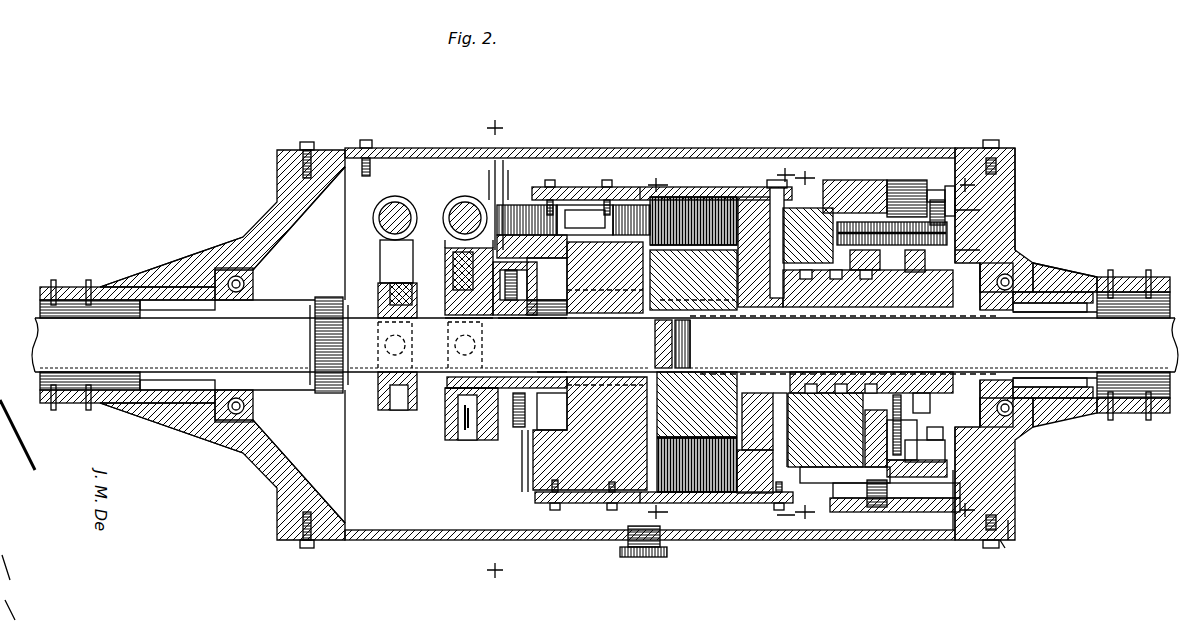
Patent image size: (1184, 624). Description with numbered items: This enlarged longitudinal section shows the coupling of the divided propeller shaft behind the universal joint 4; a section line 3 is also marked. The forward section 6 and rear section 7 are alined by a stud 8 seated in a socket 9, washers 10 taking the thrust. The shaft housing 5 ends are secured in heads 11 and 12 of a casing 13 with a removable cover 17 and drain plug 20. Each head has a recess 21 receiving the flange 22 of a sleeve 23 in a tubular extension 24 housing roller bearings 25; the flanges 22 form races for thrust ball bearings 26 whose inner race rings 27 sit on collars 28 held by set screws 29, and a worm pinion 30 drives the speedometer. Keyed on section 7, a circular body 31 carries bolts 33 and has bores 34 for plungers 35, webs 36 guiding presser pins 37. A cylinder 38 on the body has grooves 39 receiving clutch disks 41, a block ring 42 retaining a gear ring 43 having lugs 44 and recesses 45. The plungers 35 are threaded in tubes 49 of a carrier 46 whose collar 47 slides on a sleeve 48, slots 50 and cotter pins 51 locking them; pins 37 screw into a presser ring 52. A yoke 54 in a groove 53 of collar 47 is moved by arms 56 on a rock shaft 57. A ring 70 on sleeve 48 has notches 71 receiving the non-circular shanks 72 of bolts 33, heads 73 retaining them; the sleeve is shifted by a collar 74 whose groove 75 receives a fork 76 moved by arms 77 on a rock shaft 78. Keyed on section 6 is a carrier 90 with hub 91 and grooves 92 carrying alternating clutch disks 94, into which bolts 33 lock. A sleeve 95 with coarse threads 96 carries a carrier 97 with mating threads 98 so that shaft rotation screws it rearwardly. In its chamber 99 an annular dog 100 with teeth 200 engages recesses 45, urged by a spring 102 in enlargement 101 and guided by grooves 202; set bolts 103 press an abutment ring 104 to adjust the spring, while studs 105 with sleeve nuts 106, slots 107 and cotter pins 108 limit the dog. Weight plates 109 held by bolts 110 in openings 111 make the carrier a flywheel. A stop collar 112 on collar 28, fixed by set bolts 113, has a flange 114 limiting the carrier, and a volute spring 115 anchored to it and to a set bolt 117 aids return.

The section line 3 is at (969, 350).
The universal joint 4 is at (810, 343).
The housing 5 is at (14, 288).
The forward section 6 is at (897, 347).
The rear section 7 is at (605, 345).
The stud 8 is at (655, 330).
The socket 9 is at (675, 350).
The washers 10 is at (690, 333).
The head 11 is at (172, 254).
The head 12 is at (1012, 222).
The casing 13 is at (430, 540).
The removable cover 17 is at (690, 197).
The drain plug 20 is at (668, 552).
The countersunk recesses 21 is at (215, 268).
The radial flanges 22 is at (230, 425).
The sleeves 23 is at (175, 283).
The tubular extensions 24 is at (180, 432).
The roller bearings 25 is at (183, 318).
The end thrust ball bearings 26 is at (236, 276).
The inner race rings 27 is at (262, 286).
The collars 28 is at (300, 395).
The set screws 29 is at (1000, 268).
The worm pinion 30 is at (332, 396).
The circular body 31 is at (540, 470).
The bolts 33 is at (507, 354).
The openings 34 is at (600, 185).
The plungers 35 is at (562, 204).
The webs 36 is at (585, 220).
The presser pins 37 is at (618, 205).
The cylinder 38 is at (586, 505).
The longitudinal grooves 39 is at (704, 493).
The clutch disks 41 is at (700, 197).
The block ring 42 is at (777, 180).
The gear ring 43 is at (743, 493).
The lugs 44 is at (748, 197).
The recesses 45 is at (735, 492).
The carrier 46 is at (473, 208).
The collar 47 is at (448, 418).
The sleeve 48 is at (515, 335).
The internally threaded tubes 49 is at (500, 175).
The slots 50 is at (508, 170).
The cotter pins 51 is at (489, 170).
The presser ring 52 is at (640, 187).
The annular groove 53 is at (512, 418).
The fork 54 is at (452, 272).
The arms 56 is at (450, 246).
The rock shaft 57 is at (457, 209).
The bolt-carrying ring 70 is at (545, 372).
The notches 71 is at (547, 279).
The shanks 72 is at (562, 366).
The heads 73 is at (518, 282).
The collar 74 is at (378, 302).
The annular groove 75 is at (395, 412).
The fork 76 is at (400, 283).
The arms 77 is at (380, 254).
The rock shaft 78 is at (378, 218).
The circular carrier body 90 is at (748, 393).
The hub portion 91 is at (780, 393).
The longitudinal grooves 92 is at (792, 393).
The clutch disks 94 is at (700, 372).
The sleeve 95 is at (880, 395).
The coarse threads 96 is at (860, 393).
The carrier 97 is at (875, 218).
The coarse threads 98 is at (810, 393).
The annular chamber 99 is at (895, 467).
The annular dog 100 is at (820, 485).
The enlargement 101 is at (826, 209).
The expansion spring 102 is at (848, 222).
The set bolts 103 is at (990, 235).
The abutment ring 104 is at (908, 512).
The studs 105 is at (898, 189).
The sleeve nut 106 is at (935, 190).
The longitudinal slots 107 is at (953, 186).
The cotter pin 108 is at (1000, 210).
The lugs 109 is at (935, 456).
The bolts 110 is at (955, 526).
The openings 111 is at (870, 513).
The stop collar 112 is at (930, 395).
The set bolts 113 is at (930, 262).
The annular flange 114 is at (893, 280).
The volute spring 115 is at (942, 444).
The set bolt 117 is at (905, 393).
The teeth 200 is at (858, 372).
The longitudinal grooves 202 is at (882, 234).